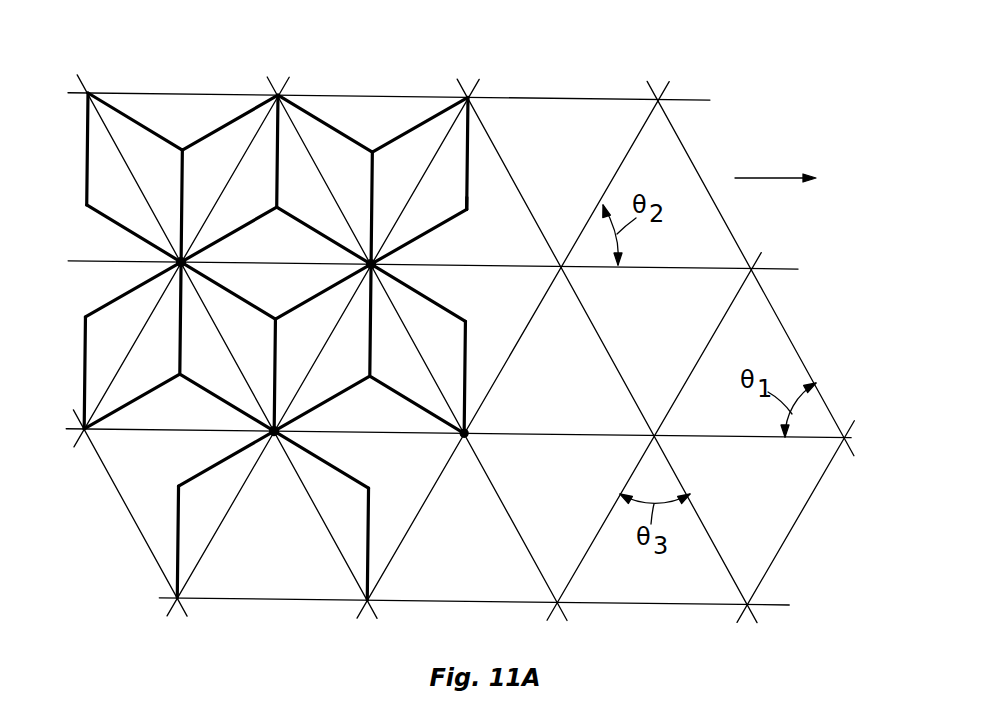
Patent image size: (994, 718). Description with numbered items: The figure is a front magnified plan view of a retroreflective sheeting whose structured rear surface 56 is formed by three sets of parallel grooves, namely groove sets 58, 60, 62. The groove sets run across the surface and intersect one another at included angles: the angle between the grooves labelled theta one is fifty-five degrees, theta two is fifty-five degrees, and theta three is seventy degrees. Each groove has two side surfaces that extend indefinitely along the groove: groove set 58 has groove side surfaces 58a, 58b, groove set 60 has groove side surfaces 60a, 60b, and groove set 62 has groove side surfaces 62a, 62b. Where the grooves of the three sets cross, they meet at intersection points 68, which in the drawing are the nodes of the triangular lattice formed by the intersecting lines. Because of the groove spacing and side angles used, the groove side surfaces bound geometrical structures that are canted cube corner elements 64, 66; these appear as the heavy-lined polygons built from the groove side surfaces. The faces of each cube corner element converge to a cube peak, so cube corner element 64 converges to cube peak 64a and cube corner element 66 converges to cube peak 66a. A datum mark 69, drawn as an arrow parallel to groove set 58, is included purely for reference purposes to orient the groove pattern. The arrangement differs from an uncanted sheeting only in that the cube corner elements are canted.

The structured rear surface 56 is at (560, 80).
The groove set 58 is at (703, 100).
The groove side surface 58a is at (162, 130).
The groove side surface 58b is at (255, 253).
The groove set 60 is at (82, 80).
The groove side surface 60a is at (137, 177).
The groove side surface 60b is at (94, 206).
The groove set 62 is at (482, 83).
The groove side surface 62a is at (188, 177).
The groove side surface 62b is at (228, 206).
The canted cube corner element 64 is at (141, 101).
The cube peak 64a is at (469, 318).
The canted cube corner element 66 is at (123, 392).
The cube peak 66a is at (470, 212).
The intersection point 68 is at (176, 259).
The datum mark 69 is at (757, 178).